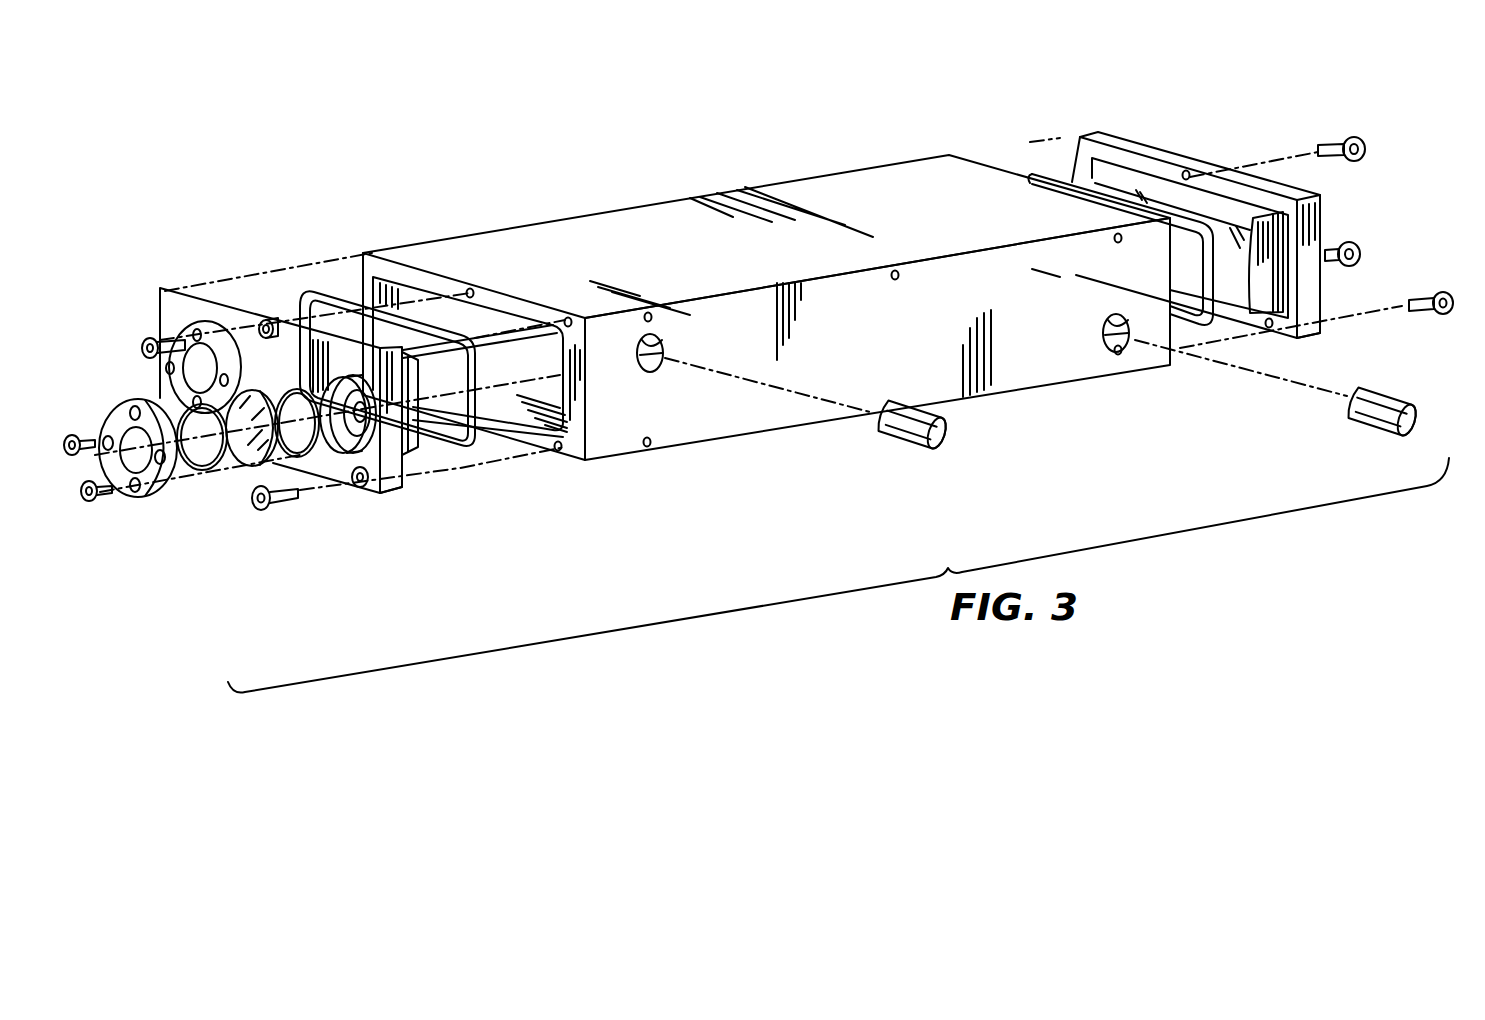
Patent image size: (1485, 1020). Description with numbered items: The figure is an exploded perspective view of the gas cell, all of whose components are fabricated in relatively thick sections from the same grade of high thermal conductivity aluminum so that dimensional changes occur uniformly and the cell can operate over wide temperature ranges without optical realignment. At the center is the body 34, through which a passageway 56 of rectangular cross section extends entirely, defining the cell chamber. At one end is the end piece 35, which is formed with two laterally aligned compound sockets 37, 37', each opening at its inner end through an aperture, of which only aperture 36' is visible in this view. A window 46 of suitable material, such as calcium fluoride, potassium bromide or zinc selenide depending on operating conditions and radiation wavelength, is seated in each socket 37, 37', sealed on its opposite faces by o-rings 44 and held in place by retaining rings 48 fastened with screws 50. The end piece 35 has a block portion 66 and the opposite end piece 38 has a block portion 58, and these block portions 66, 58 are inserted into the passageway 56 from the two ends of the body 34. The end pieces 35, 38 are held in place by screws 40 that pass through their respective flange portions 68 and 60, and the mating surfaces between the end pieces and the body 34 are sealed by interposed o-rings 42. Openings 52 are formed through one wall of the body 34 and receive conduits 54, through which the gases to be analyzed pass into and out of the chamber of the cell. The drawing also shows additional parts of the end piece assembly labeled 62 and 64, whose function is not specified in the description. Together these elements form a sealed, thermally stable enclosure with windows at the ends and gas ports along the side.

The body 34 is at (683, 235).
The end piece 35 is at (382, 500).
The aperture 36' is at (340, 363).
The compound socket 37 is at (213, 320).
The compound socket 37' is at (420, 401).
The end piece 38 is at (1112, 128).
The screw 40 is at (148, 347).
The o-ring 42 is at (468, 445).
The o-ring 44 is at (290, 395).
The window 46 is at (226, 398).
The retaining ring 48 is at (118, 420).
The screw 50 is at (72, 457).
The opening 52 is at (663, 341).
The conduit 54 is at (905, 448).
The passageway 56 is at (515, 315).
The block portion 58 is at (1283, 303).
The flange portion 60 is at (1320, 333).
The window frame 62 is at (1106, 180).
The window plate 64 is at (1238, 266).
The block portion 66 is at (412, 460).
The flange portion 68 is at (168, 305).